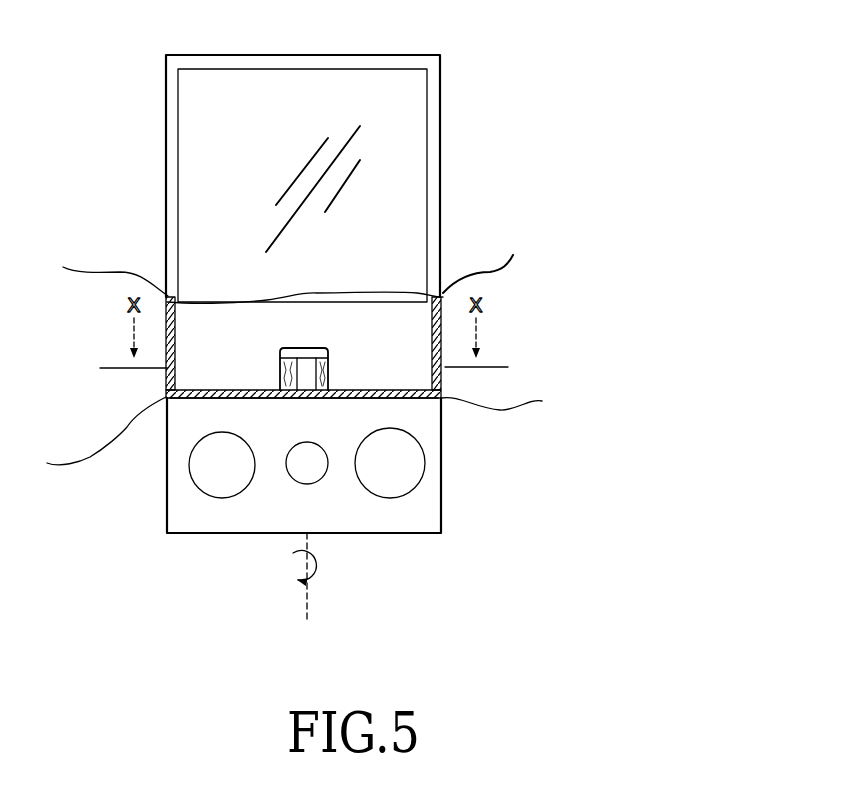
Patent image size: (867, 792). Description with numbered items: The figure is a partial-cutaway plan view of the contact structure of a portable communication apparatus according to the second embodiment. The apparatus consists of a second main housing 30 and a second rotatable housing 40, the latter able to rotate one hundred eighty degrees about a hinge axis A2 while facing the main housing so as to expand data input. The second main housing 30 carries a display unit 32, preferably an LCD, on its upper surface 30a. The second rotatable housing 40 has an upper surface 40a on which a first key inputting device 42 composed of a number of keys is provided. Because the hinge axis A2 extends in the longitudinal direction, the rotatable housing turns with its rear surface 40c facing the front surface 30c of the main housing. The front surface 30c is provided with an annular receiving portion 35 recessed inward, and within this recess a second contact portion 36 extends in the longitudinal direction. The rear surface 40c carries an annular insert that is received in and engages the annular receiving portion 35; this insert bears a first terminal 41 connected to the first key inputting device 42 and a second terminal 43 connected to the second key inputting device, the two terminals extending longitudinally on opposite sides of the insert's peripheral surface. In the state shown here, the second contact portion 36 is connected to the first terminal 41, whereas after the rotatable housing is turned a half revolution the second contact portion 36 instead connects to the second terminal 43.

The second main housing 30 is at (449, 160).
The upper surface 30a is at (432, 130).
The front surface 30c is at (441, 377).
The display unit 32 is at (405, 100).
The annular receiving portion 35 is at (332, 364).
The second contact portion 36 is at (282, 373).
The second terminal 43 is at (307, 382).
The second rotatable housing 40 is at (447, 460).
The upper surface 40a is at (430, 445).
The rear surface 40c is at (203, 400).
The first terminal 41 is at (307, 383).
The first key inputting device 42 is at (394, 476).
The hinge axis A2 is at (310, 603).